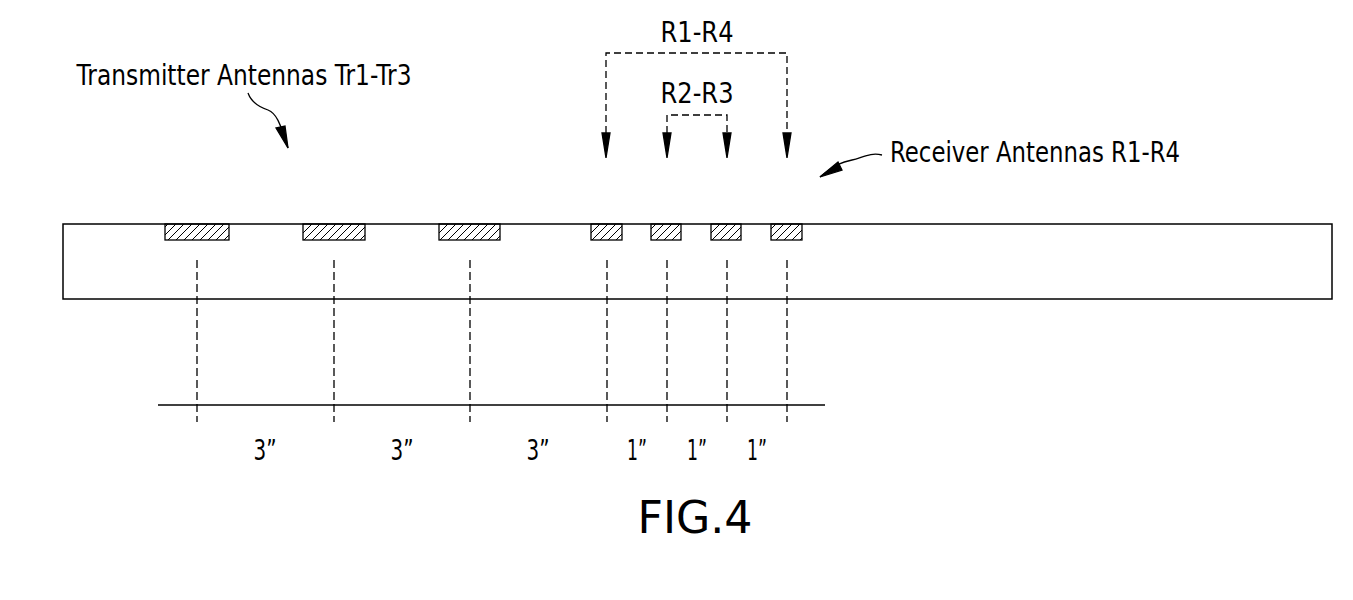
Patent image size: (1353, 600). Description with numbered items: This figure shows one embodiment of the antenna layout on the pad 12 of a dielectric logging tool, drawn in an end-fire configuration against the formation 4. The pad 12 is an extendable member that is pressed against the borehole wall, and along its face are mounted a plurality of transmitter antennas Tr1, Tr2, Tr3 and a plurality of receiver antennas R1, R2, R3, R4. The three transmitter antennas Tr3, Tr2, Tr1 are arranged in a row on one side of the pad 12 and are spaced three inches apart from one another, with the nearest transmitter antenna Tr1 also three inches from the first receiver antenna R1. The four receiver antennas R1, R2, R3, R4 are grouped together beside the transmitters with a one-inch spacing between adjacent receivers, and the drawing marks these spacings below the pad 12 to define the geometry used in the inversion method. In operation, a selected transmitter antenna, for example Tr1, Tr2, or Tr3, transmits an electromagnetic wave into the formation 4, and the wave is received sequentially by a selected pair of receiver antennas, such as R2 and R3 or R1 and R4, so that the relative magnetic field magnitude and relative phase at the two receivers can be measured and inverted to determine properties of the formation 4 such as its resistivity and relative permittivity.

The pad 12 is at (1183, 224).
The formation 4 is at (1112, 46).
The transmitter antenna Tr1 is at (469, 213).
The transmitter antenna Tr2 is at (334, 213).
The transmitter antenna Tr3 is at (197, 213).
The receiver antenna R1 is at (606, 213).
The receiver antenna R2 is at (666, 213).
The receiver antenna R3 is at (726, 213).
The receiver antenna R4 is at (786, 213).